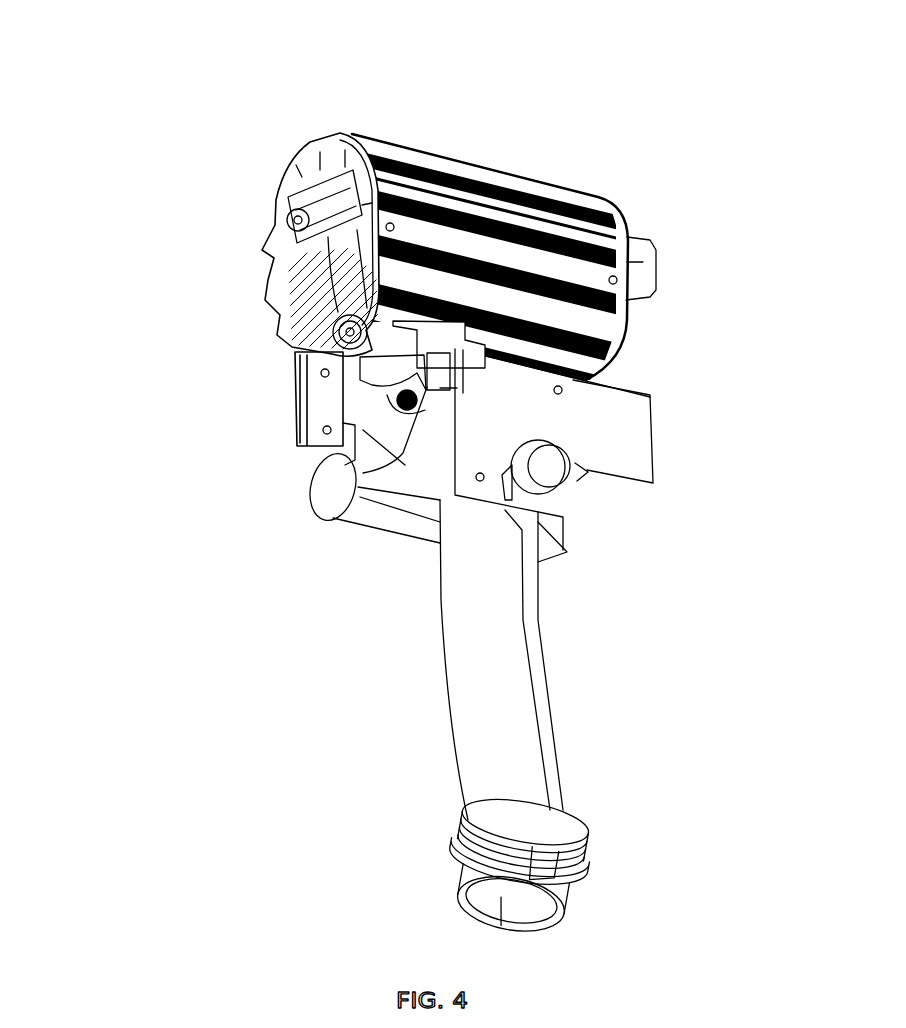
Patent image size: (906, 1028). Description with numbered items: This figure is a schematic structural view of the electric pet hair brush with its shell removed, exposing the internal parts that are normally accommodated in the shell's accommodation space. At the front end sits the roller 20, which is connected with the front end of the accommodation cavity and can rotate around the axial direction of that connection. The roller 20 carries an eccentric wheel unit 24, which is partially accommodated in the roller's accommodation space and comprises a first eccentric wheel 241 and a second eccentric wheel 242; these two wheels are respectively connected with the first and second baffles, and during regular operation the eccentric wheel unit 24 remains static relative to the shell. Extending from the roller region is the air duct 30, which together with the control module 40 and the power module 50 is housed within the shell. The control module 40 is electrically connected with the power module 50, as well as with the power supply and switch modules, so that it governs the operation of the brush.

The roller 20 is at (580, 177).
The eccentric wheel unit 24 is at (127, 45).
The first eccentric wheel 241 is at (277, 207).
The second eccentric wheel 242 is at (453, 213).
The air duct 30 is at (503, 648).
The control module 40 is at (617, 433).
The power module 50 is at (333, 518).